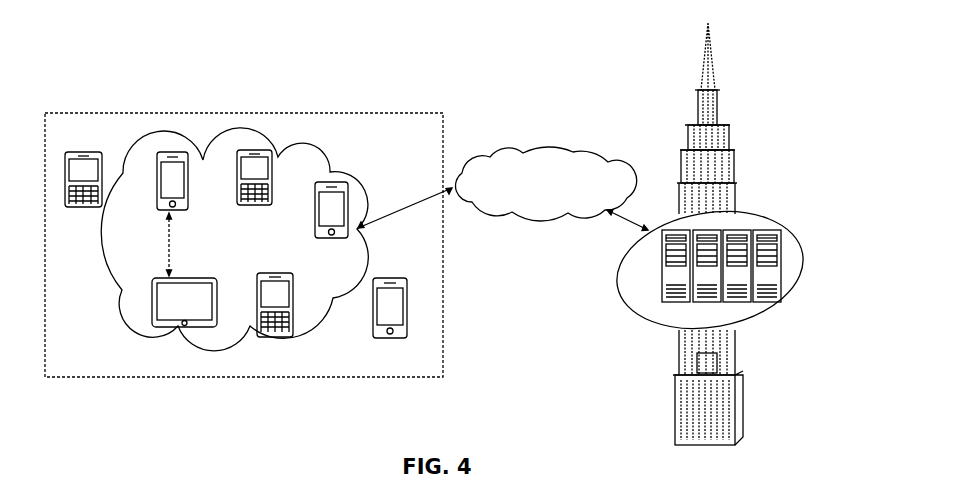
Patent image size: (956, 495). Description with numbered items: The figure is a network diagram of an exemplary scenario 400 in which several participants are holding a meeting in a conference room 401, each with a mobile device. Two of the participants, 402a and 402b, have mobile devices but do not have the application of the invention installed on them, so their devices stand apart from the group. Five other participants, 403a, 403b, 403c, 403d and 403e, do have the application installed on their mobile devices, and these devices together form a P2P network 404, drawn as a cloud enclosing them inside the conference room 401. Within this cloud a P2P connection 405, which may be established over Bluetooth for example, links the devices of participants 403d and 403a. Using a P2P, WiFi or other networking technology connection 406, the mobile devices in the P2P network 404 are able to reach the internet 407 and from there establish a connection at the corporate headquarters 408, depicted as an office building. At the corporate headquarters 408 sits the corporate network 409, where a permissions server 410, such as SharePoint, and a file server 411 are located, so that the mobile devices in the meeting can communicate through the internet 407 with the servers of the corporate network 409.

The exemplary scenario 400 is at (778, 57).
The conference room 401 is at (433, 103).
The participant 402a is at (89, 142).
The participant 402b is at (397, 272).
The participant 403a is at (195, 184).
The participant 403b is at (278, 181).
The participant 403c is at (354, 202).
The participant 403d is at (199, 277).
The participant 403e is at (289, 265).
The P2P network 404 is at (308, 142).
The P2P connection 405 is at (178, 228).
The connection 406 is at (435, 212).
The internet 407 is at (583, 148).
The corporate headquarters 408 is at (737, 125).
The corporate network 409 is at (710, 263).
The permissions server 410 is at (687, 226).
The file server 411 is at (742, 228).